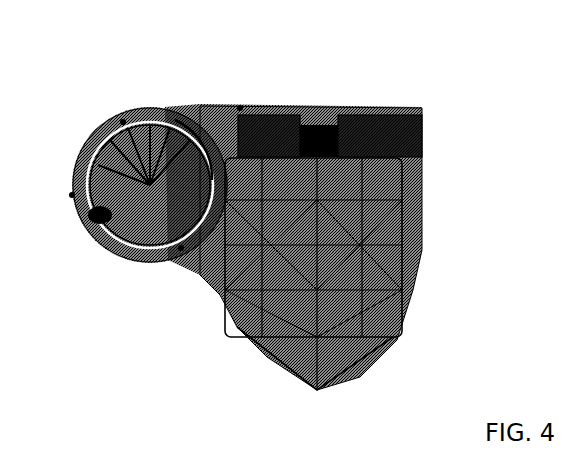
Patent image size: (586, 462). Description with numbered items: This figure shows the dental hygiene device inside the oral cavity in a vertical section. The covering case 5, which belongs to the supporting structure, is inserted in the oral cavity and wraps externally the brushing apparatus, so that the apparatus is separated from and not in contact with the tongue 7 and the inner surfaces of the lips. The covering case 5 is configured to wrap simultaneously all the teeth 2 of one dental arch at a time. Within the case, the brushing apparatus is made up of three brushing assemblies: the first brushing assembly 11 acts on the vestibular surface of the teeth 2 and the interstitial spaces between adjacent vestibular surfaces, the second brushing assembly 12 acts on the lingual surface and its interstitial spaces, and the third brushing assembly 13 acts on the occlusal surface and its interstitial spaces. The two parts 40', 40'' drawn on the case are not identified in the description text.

The teeth 2 is at (148, 243).
The covering case 5 is at (122, 120).
The tongue 7 is at (348, 360).
The first brushing assembly 11 is at (95, 226).
The second brushing assembly 12 is at (190, 112).
The third brushing assembly 13 is at (168, 112).
The first module 40' is at (284, 97).
The second module 40'' is at (372, 98).